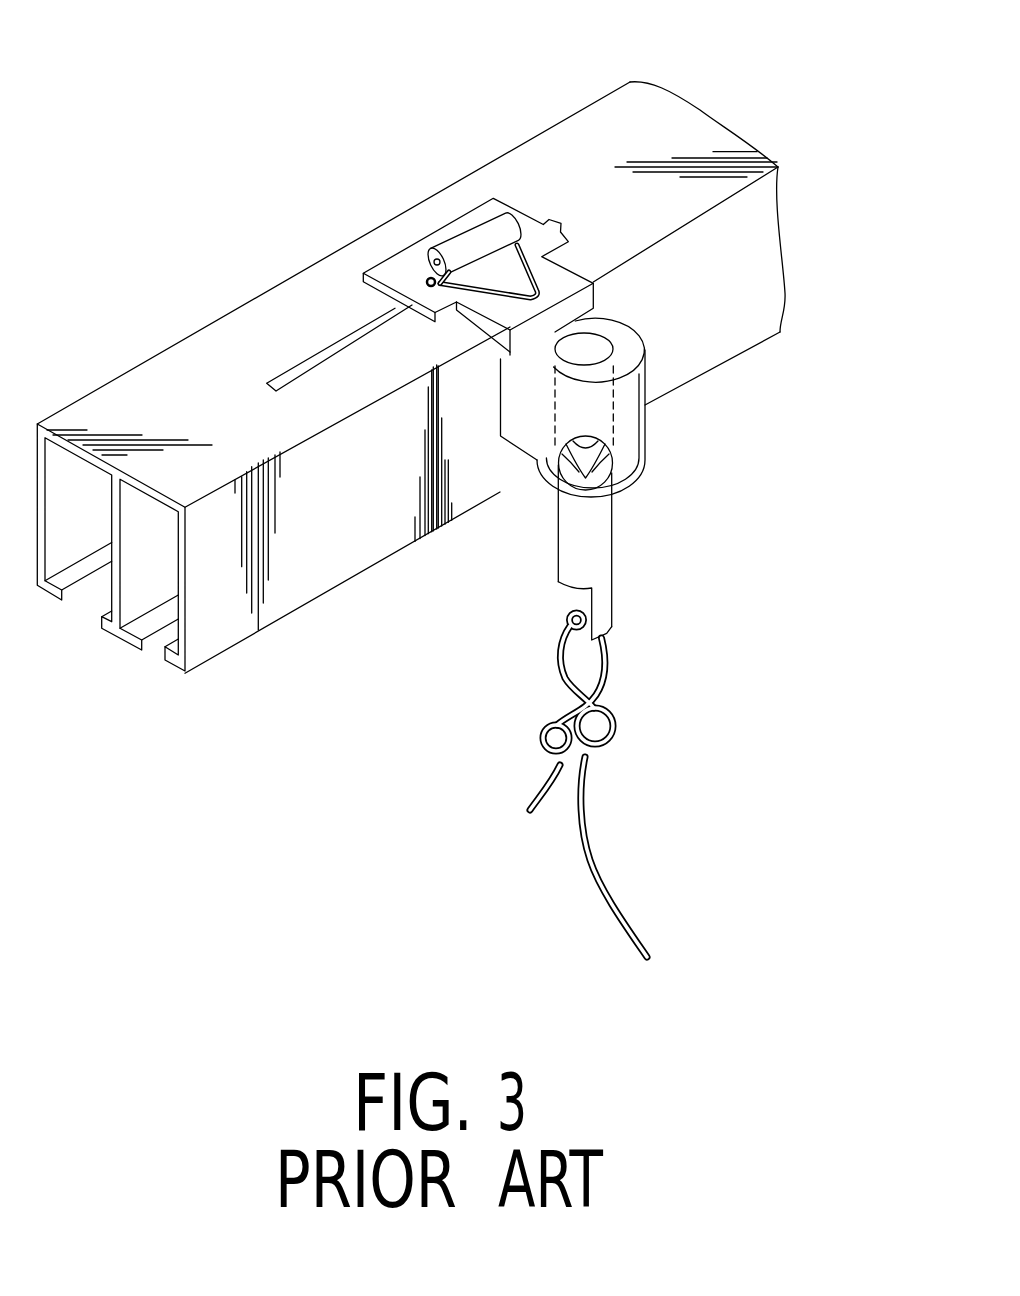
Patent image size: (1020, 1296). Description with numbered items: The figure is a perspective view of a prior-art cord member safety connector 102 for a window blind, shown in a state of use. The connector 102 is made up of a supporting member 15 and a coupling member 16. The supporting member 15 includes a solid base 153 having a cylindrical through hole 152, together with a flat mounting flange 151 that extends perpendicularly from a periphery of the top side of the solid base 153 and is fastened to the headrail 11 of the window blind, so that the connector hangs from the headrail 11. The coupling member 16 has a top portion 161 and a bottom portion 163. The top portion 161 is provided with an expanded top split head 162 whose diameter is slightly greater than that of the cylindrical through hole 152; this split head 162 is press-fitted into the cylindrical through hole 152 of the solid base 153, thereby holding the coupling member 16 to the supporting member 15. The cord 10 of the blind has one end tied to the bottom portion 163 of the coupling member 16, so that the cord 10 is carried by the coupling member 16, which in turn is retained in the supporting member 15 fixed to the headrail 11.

The cord 10 is at (604, 826).
The headrail 11 is at (700, 147).
The cord member safety connector 102 is at (598, 192).
The supporting member 15 is at (400, 256).
The flat mounting flange 151 is at (477, 220).
The cylindrical through hole 152 is at (580, 347).
The solid base 153 is at (645, 390).
The coupling member 16 is at (617, 538).
The top portion 161 is at (587, 475).
The expanded top split head 162 is at (647, 457).
The bottom portion 163 is at (603, 605).